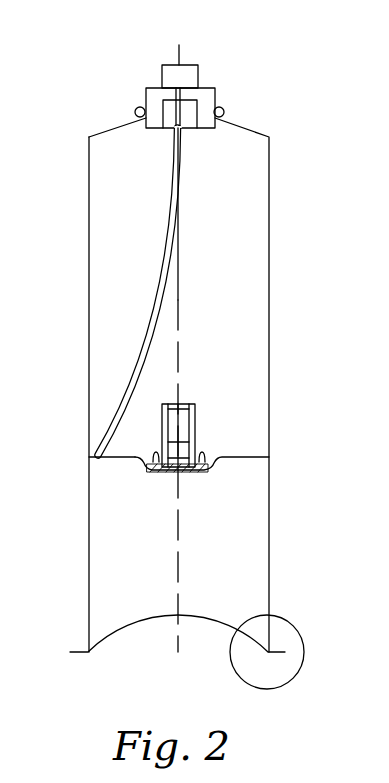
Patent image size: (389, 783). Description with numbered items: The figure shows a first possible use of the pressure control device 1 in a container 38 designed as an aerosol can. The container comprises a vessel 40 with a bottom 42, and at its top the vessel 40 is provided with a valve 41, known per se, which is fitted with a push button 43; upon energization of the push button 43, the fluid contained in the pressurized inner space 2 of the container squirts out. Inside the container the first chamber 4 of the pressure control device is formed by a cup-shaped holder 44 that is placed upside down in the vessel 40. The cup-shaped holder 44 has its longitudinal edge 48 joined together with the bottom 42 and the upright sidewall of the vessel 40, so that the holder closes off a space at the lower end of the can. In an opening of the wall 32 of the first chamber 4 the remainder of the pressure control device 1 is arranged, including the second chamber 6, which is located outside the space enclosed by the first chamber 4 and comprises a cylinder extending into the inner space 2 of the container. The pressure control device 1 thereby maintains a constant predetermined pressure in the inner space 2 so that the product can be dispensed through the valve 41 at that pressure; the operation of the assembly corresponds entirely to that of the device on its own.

The pressure control device 1 is at (197, 437).
The inner space 2 is at (229, 245).
The first chamber 4 is at (231, 565).
The second chamber 6 is at (172, 425).
The wall of the first chamber 32 is at (250, 455).
The container 38 is at (108, 265).
The vessel 40 is at (269, 233).
The valve 41 is at (190, 112).
The bottom 42 is at (125, 628).
The push button 43 is at (173, 65).
The cup-shaped holder 44 is at (132, 462).
The longitudinal edge 48 is at (268, 652).